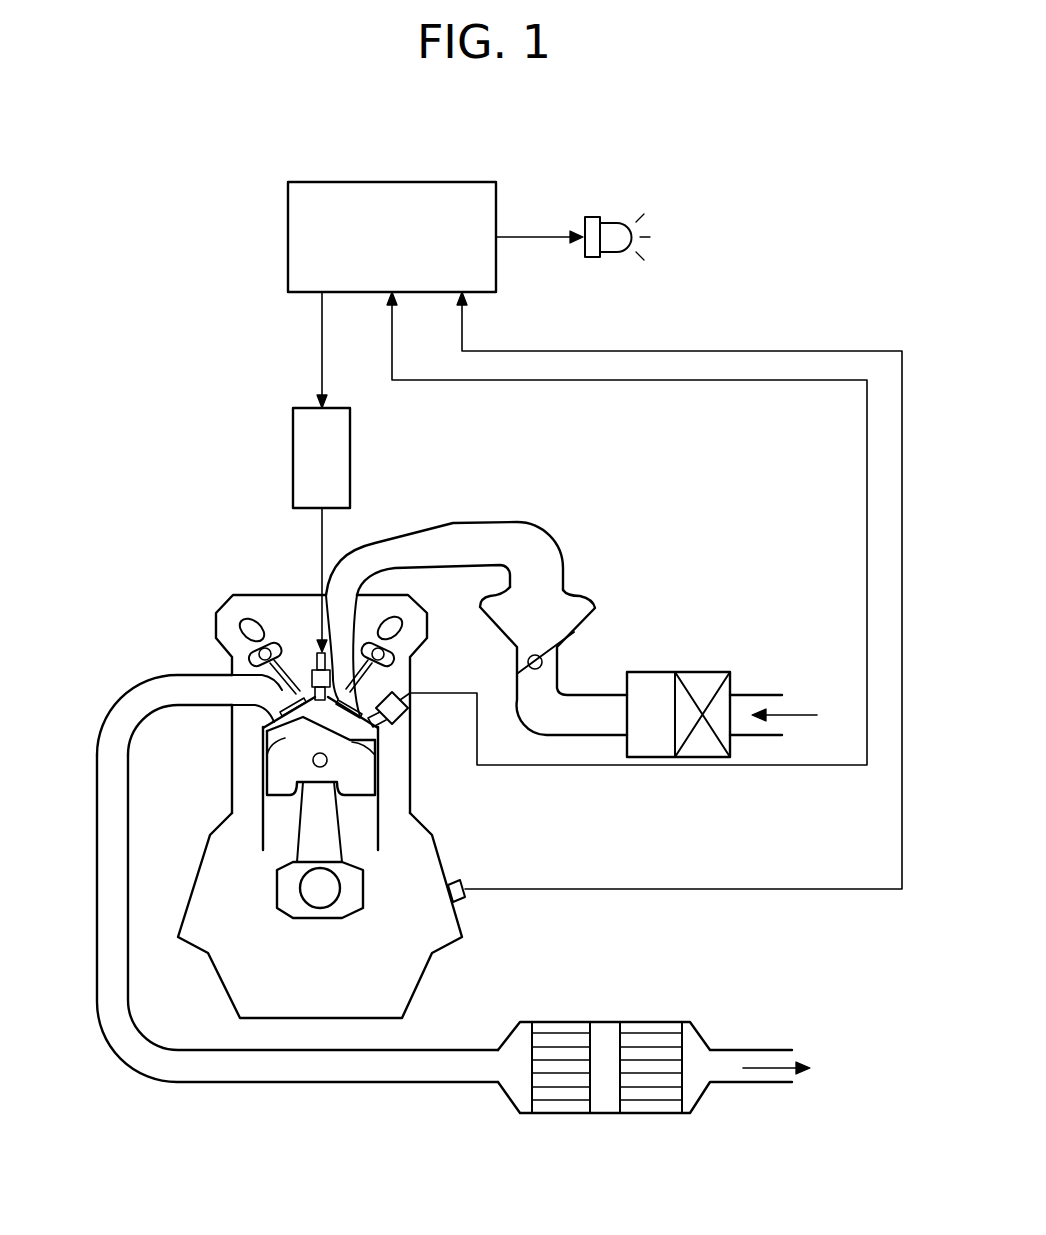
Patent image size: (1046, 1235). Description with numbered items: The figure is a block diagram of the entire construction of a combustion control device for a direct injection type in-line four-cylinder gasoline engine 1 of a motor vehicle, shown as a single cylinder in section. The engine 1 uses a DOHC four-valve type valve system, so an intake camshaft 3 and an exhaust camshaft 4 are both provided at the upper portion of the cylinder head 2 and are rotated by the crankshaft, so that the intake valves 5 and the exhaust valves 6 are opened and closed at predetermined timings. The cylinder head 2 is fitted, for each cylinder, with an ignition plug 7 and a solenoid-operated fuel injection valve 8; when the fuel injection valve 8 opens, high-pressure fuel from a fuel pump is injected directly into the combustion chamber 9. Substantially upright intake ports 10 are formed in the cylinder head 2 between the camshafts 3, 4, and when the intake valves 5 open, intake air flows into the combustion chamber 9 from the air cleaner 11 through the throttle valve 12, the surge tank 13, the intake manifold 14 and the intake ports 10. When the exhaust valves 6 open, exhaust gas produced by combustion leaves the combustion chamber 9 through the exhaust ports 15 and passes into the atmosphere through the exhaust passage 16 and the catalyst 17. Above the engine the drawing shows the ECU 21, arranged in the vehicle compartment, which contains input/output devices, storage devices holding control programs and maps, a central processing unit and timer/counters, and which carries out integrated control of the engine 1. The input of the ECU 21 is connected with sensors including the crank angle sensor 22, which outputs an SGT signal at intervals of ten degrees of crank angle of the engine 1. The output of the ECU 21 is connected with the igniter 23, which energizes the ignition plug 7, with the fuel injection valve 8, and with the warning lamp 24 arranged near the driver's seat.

The engine 1 is at (147, 617).
The cylinder head 2 is at (260, 603).
The intake camshaft 3 is at (402, 623).
The exhaust camshaft 4 is at (248, 625).
The intake valve 5 is at (376, 750).
The exhaust valve 6 is at (267, 747).
The ignition plug 7 is at (312, 668).
The fuel injection valve 8 is at (406, 716).
The combustion chamber 9 is at (332, 722).
The intake port 10 is at (377, 545).
The air cleaner 11 is at (706, 680).
The throttle valve 12 is at (552, 644).
The surge tank 13 is at (582, 597).
The intake manifold 14 is at (460, 530).
The exhaust port 15 is at (243, 683).
The exhaust passage 16 is at (110, 839).
The catalyst 17 is at (605, 1030).
The ECU 21 is at (322, 182).
The crank angle sensor 22 is at (466, 883).
The igniter 23 is at (350, 423).
The warning lamp 24 is at (613, 230).